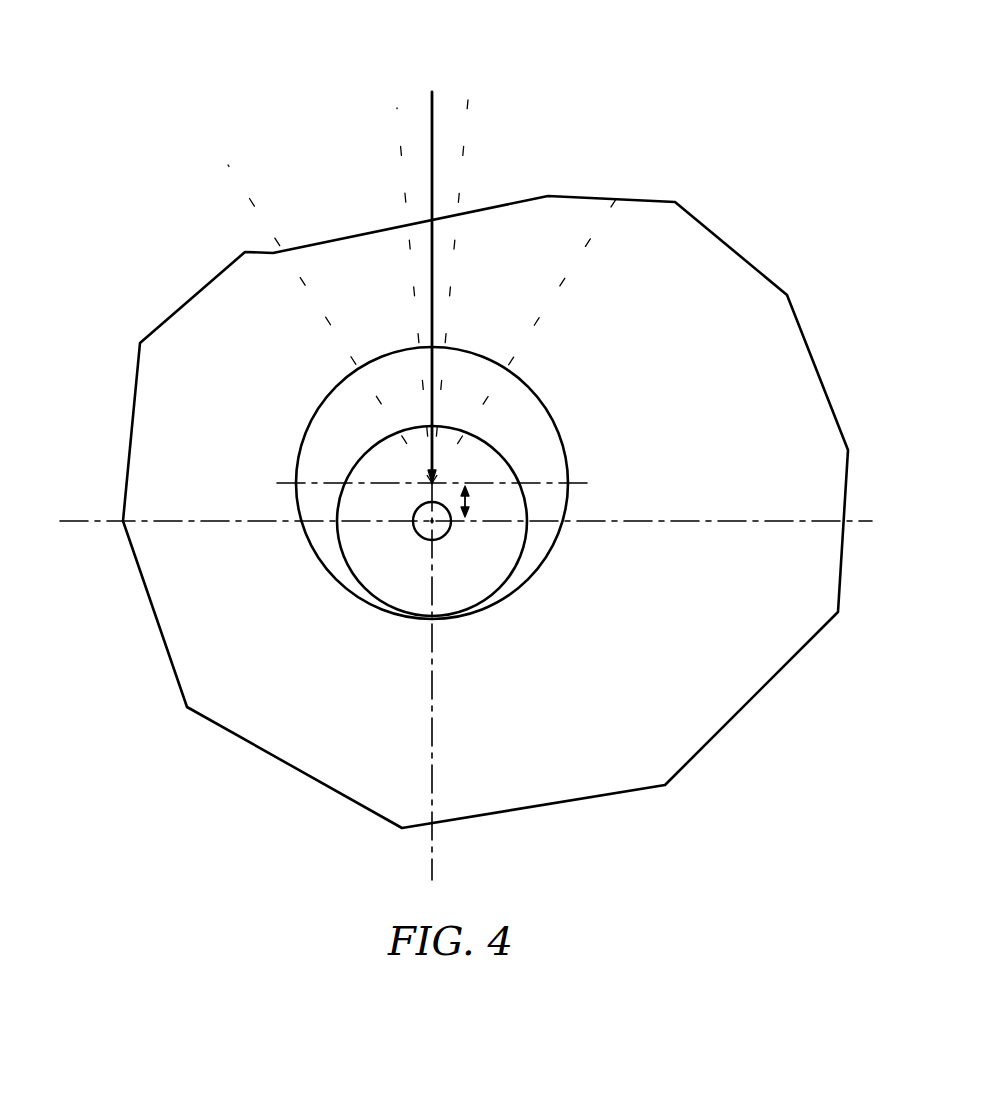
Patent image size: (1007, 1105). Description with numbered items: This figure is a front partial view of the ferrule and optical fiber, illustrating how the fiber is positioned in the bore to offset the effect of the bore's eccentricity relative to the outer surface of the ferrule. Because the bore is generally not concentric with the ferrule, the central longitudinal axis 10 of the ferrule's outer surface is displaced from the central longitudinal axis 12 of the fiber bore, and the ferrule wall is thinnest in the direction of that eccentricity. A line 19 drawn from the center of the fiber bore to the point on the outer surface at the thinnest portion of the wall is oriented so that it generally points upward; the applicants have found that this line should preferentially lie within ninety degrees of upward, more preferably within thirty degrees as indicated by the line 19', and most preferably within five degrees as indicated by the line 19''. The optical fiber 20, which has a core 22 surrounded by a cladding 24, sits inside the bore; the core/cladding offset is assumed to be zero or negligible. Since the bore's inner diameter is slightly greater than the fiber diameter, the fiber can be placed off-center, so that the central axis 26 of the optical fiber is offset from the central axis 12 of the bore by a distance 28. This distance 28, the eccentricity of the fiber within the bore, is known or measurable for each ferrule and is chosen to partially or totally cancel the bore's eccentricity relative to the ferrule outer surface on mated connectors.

The central longitudinal axis of the outer surface of the ferrule 10 is at (725, 523).
The central longitudinal axis of the fiber bore 12 is at (580, 483).
The line 19 is at (424, 261).
The line within 30 degrees of upward 19' is at (467, 295).
The line within 5 degrees of upward 19'' is at (434, 261).
The optical fiber 20 is at (512, 572).
The core 22 is at (442, 532).
The cladding 24 is at (358, 556).
The central axis of the optical fiber 26 is at (428, 523).
The distance 28 is at (481, 501).